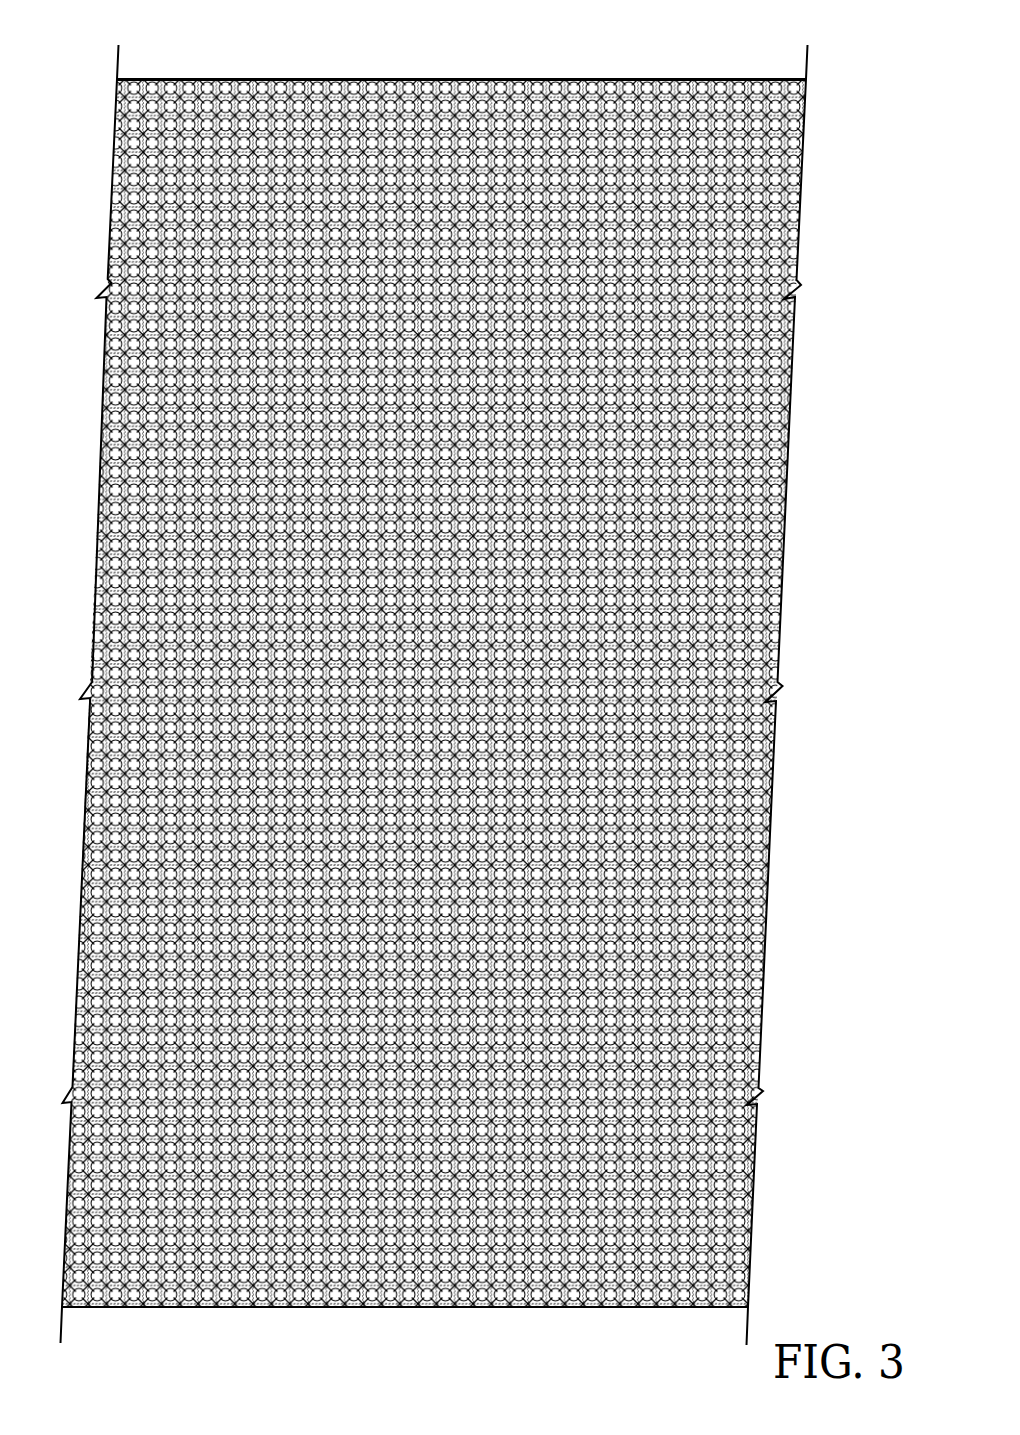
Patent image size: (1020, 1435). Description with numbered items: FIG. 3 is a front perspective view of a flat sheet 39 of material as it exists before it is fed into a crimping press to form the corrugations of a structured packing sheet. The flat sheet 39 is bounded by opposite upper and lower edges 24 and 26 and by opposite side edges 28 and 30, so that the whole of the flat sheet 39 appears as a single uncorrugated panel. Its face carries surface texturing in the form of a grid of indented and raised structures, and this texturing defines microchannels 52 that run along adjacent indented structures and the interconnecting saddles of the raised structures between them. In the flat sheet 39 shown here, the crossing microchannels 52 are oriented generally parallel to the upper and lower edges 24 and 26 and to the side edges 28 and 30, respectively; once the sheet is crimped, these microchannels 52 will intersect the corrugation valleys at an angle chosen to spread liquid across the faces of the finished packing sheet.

The upper edge 24 is at (605, 79).
The lower edge 26 is at (618, 1308).
The side edge 28 is at (93, 598).
The side edge 30 is at (781, 630).
The flat sheet 39 is at (462, 691).
The microchannels 52 is at (730, 72).